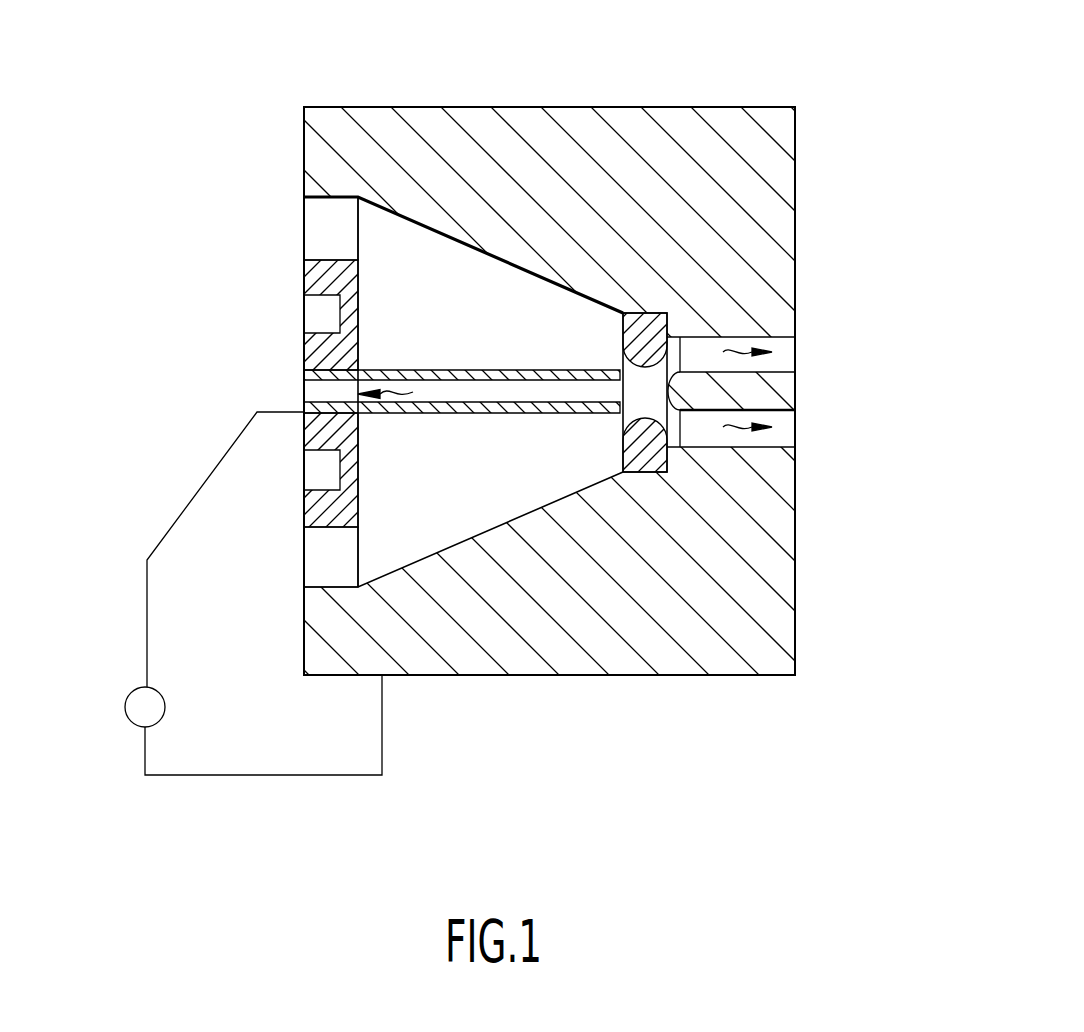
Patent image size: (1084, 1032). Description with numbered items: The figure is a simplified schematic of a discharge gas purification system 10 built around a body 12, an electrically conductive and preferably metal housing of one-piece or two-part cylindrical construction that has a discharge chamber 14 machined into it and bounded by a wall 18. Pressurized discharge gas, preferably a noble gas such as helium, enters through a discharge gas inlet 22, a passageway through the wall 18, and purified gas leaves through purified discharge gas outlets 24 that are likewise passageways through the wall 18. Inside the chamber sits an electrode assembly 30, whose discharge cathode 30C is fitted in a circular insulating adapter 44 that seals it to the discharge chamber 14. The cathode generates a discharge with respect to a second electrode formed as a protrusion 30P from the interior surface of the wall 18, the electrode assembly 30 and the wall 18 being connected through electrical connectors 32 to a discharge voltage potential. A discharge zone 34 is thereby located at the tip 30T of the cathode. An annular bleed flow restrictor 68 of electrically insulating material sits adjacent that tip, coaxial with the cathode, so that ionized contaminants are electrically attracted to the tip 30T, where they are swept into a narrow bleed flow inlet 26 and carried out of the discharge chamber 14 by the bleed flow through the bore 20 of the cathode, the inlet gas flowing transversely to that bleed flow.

The discharge gas purification system 10 is at (486, 755).
The body 12 is at (470, 107).
The discharge chamber 14 is at (410, 348).
The wall 18 is at (464, 243).
The bore 20 is at (600, 430).
The discharge gas inlet 22 is at (322, 237).
The purified discharge gas outlets 24 is at (782, 353).
The bleed flow inlet 26 is at (303, 401).
The electrode assembly 30 is at (166, 707).
The discharge cathode 30C is at (490, 414).
The protrusion 30P is at (780, 400).
The tip 30T is at (618, 378).
The electrical connectors 32 is at (147, 617).
The discharge zone 34 is at (682, 330).
The insulating adapter 44 is at (304, 283).
The bleed flow restrictor 68 is at (623, 322).